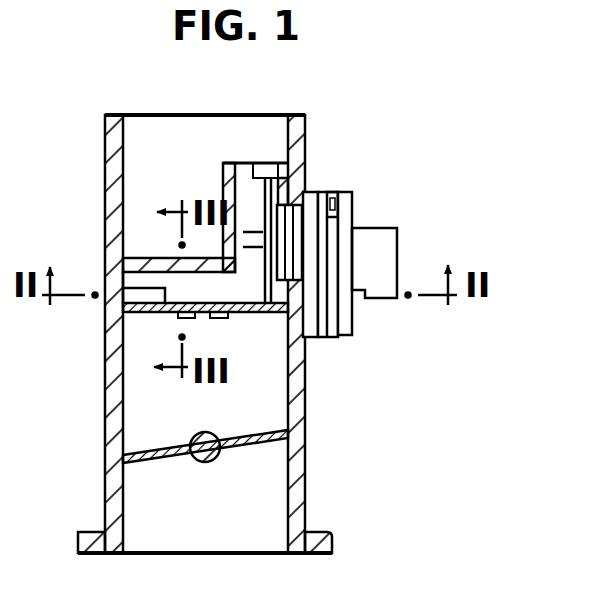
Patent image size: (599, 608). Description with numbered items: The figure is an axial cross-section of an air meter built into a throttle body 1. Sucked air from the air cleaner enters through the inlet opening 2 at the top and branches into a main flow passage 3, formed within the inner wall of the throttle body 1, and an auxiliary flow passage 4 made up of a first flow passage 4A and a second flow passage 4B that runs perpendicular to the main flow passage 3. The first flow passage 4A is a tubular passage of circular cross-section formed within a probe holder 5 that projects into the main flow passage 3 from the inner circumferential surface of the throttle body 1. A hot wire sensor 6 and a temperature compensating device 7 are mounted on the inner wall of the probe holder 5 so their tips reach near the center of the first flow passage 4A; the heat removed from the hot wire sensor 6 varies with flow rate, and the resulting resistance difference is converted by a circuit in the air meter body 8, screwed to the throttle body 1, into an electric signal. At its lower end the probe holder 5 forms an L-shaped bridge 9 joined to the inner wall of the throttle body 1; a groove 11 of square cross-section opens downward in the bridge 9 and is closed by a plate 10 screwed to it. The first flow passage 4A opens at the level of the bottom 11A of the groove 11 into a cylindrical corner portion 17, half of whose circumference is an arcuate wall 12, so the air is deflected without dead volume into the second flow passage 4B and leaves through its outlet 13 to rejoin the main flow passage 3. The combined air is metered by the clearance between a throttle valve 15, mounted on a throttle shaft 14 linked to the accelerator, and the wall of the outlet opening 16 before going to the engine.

The throttle body 1 is at (105, 163).
The inlet opening 2 is at (178, 117).
The main flow passage 3 is at (210, 170).
The auxiliary flow passage 4 is at (188, 206).
The first flow passage 4A is at (303, 182).
The second flow passage 4B is at (172, 320).
The probe holder 5 is at (250, 185).
The hot wire sensor 6 is at (258, 245).
The temperature compensating device 7 is at (275, 285).
The air meter body 8 is at (392, 246).
The bridge 9 is at (150, 256).
The plate 10 is at (243, 318).
The groove 11 is at (133, 281).
The bottom of the groove 11A is at (188, 272).
The arcuate wall 12 is at (264, 314).
The outlet 13 is at (138, 320).
The throttle shaft 14 is at (210, 462).
The throttle valve 15 is at (262, 440).
The outlet opening 16 is at (262, 555).
The corner portion 17 is at (240, 312).